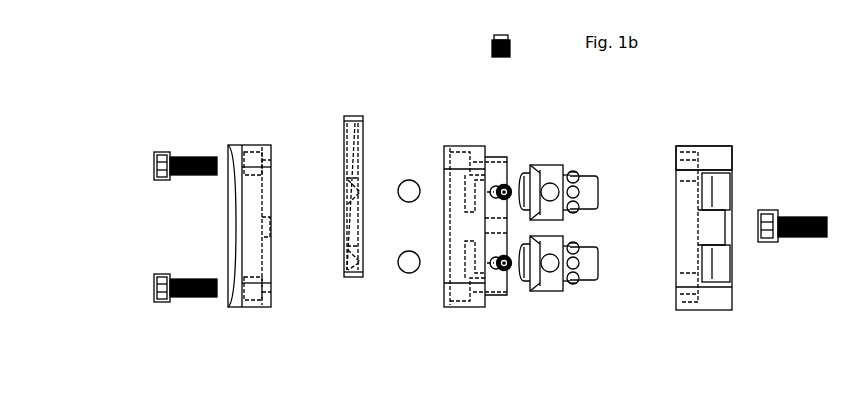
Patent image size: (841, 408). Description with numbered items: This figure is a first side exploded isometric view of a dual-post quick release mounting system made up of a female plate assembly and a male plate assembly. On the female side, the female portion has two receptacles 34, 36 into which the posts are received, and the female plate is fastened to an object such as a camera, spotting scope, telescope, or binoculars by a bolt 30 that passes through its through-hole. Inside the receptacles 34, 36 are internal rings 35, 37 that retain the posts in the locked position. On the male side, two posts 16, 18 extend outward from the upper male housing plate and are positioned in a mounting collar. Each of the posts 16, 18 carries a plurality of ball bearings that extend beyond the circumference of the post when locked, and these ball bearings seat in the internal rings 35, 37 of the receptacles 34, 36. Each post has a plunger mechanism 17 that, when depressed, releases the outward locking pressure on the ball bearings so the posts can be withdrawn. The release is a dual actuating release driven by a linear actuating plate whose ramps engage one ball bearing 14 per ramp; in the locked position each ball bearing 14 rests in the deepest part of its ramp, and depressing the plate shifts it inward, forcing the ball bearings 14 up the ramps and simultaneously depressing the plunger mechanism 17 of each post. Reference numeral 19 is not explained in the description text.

The ball bearing 14 is at (403, 180).
The post 16 is at (568, 174).
The plunger mechanism 17 is at (531, 170).
The post 18 is at (548, 286).
The cap 19 is at (520, 272).
The bolt 30 is at (768, 210).
The receptacle 34 is at (676, 183).
The internal ring 35 is at (712, 172).
The receptacle 36 is at (712, 213).
The internal ring 37 is at (712, 280).